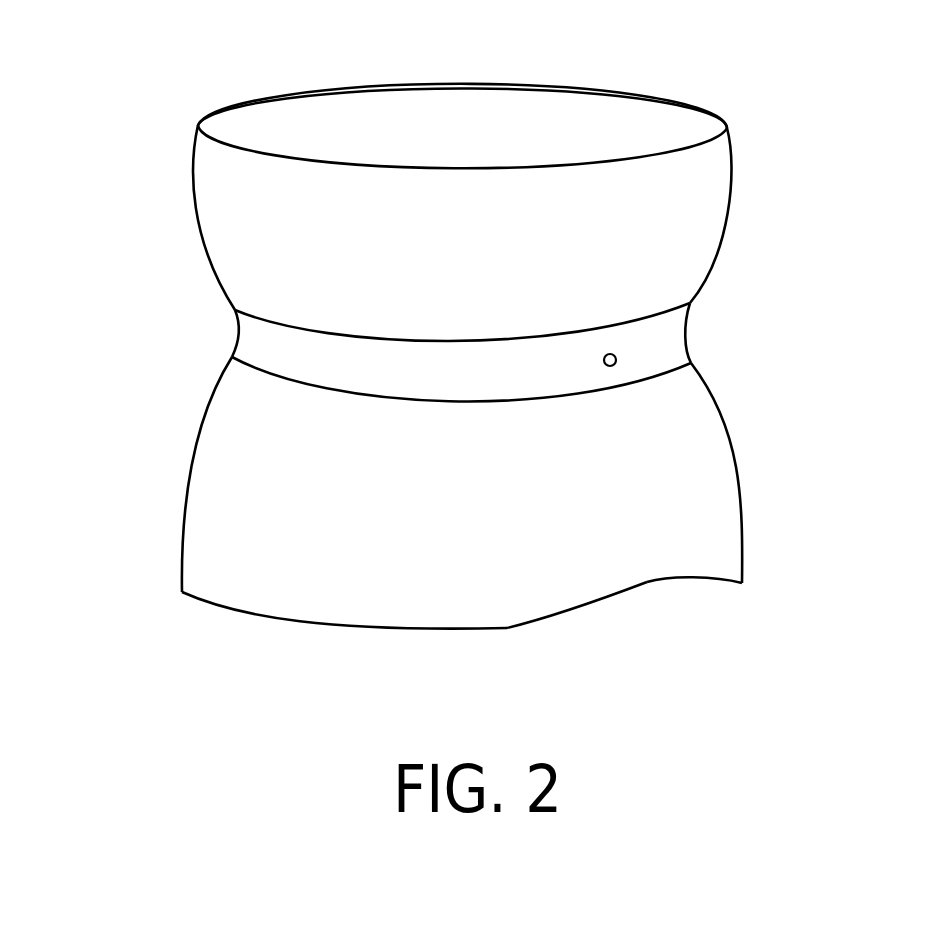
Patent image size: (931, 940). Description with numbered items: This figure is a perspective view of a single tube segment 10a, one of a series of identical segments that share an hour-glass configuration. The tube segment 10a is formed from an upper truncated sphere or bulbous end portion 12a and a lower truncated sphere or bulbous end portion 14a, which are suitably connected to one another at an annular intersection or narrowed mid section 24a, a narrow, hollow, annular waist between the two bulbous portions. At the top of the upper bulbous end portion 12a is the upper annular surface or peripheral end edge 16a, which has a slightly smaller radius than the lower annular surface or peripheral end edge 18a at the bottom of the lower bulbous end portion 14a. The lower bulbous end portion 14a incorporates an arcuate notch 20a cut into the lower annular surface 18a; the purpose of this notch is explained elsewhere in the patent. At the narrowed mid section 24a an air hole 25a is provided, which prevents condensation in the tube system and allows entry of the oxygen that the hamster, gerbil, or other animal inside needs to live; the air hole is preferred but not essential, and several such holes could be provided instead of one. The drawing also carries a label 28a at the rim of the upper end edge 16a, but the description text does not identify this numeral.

The tube segment 10a is at (755, 80).
The upper truncated sphere or bulbous end portion 12a is at (730, 213).
The lower truncated sphere or bulbous end portion 14a is at (397, 508).
The upper annular surface or peripheral end edge 16a is at (235, 100).
The lower annular surface or peripheral end edge 18a is at (277, 619).
The arcuate notch 20a is at (647, 583).
The annular intersection or narrowed mid section 24a is at (688, 340).
The air hole 25a is at (616, 364).
The rim lip 28a is at (453, 83).